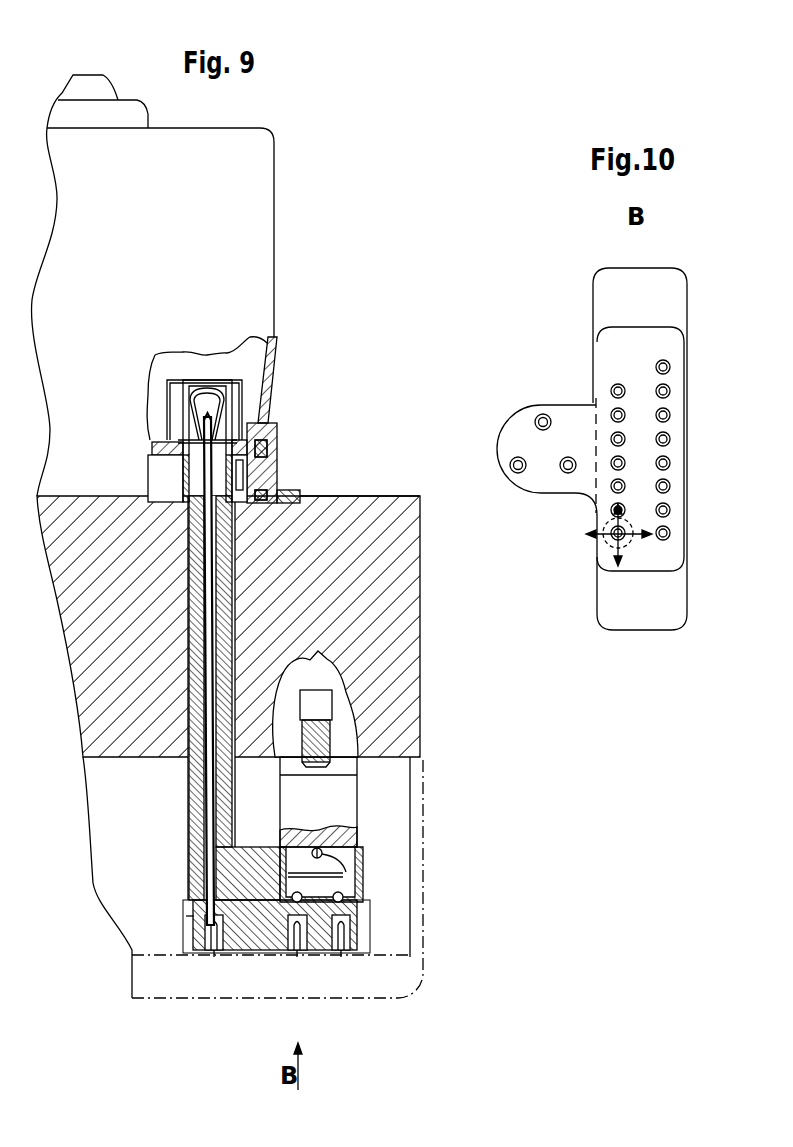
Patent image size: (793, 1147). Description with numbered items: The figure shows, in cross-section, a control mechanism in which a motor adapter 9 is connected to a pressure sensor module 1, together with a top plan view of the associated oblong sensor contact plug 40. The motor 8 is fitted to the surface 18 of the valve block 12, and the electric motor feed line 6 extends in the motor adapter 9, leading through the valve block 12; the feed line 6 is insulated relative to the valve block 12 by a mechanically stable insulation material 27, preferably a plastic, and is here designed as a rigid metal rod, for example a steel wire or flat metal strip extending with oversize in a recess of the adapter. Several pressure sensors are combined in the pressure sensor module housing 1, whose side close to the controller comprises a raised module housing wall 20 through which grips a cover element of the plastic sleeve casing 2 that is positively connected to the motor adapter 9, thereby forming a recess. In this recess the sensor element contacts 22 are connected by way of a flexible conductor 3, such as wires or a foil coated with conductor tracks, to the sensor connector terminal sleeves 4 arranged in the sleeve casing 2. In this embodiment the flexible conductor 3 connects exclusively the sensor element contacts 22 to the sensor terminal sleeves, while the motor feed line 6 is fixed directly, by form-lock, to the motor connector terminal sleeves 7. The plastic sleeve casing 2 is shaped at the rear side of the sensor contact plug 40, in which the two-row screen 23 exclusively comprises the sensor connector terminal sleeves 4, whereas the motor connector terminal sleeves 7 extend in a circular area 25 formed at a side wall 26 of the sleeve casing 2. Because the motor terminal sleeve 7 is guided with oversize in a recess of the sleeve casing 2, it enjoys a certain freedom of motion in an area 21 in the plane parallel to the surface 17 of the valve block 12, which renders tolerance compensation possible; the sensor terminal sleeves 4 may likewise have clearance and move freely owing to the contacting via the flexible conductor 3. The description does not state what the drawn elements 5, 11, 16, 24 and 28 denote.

In FIG. 9, the pressure sensor module housing 1 is at (340, 797).
In FIG. 9, the plastic sleeve casing 2 is at (364, 883).
In FIG. 10, the plastic sleeve casing 2 is at (681, 470).
In FIG. 9, the flexible conductor 3 is at (350, 866).
In FIG. 9, the sensor connector terminal sleeves 4 is at (347, 916).
In FIG. 10, the sensor connector terminal sleeves 4 is at (609, 414).
In FIG. 9, the contact 5 is at (297, 957).
In FIG. 9, the motor feed line 6 is at (205, 828).
In FIG. 9, the motor connector terminal sleeves 7 is at (187, 918).
In FIG. 10, the motor connector terminal sleeves 7 is at (535, 422).
In FIG. 9, the motor 8 is at (274, 200).
In FIG. 9, the motor adapter 9 is at (197, 788).
In FIG. 9, the housing 11 is at (425, 813).
In FIG. 9, the valve block 12 is at (421, 678).
In FIG. 9, the plug connection 16 is at (286, 339).
In FIG. 9, the surface of the valve block 17 is at (110, 758).
In FIG. 9, the surface of the valve block 18 is at (325, 500).
In FIG. 9, the module housing wall 20 is at (358, 848).
In FIG. 9, the area of freedom of motion 21 is at (213, 957).
In FIG. 10, the area of freedom of motion 21 is at (608, 541).
In FIG. 9, the sensor element contacts 22 is at (312, 853).
In FIG. 10, the two-row screen 23 is at (636, 370).
In FIG. 10, the connector frame 24 is at (688, 525).
In FIG. 10, the circular area 25 is at (527, 492).
In FIG. 10, the side wall of the sleeve casing 26 is at (603, 491).
In FIG. 9, the insulation material 27 is at (234, 626).
In FIG. 9, the sleeve 28 is at (195, 878).
In FIG. 10, the sensor contact plug 40 is at (600, 419).